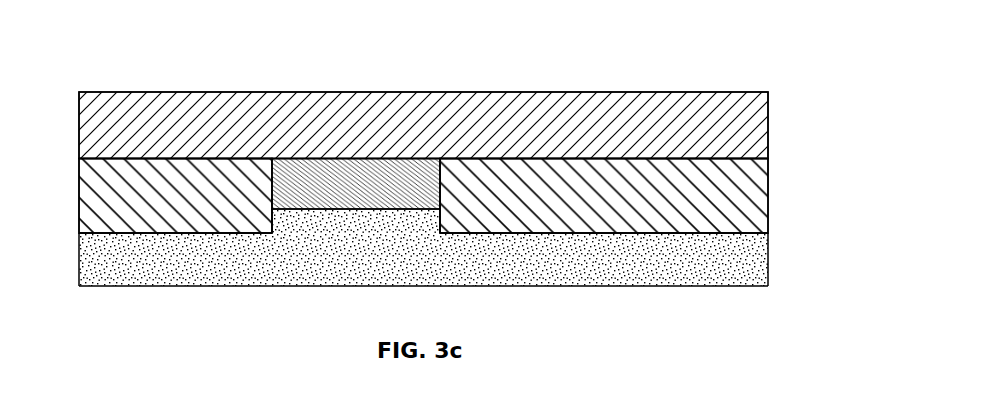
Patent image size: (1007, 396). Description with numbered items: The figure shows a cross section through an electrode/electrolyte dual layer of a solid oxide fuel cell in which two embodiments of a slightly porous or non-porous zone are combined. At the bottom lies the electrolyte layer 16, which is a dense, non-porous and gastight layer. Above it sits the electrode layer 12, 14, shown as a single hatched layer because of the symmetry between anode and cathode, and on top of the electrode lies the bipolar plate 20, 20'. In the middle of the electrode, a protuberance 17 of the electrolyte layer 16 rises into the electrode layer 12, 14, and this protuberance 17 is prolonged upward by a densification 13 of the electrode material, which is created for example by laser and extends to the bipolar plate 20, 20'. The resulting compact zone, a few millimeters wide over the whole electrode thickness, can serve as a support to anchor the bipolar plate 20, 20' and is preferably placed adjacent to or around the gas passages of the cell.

The electrode layer 12 is at (755, 217).
The cathode 14 is at (467, 196).
The densification 13 is at (365, 188).
The electrolyte layer 16 is at (88, 267).
The protuberance 17 is at (325, 227).
The bipolar plate 20 is at (452, 125).
The bipolar plate 20' is at (470, 125).